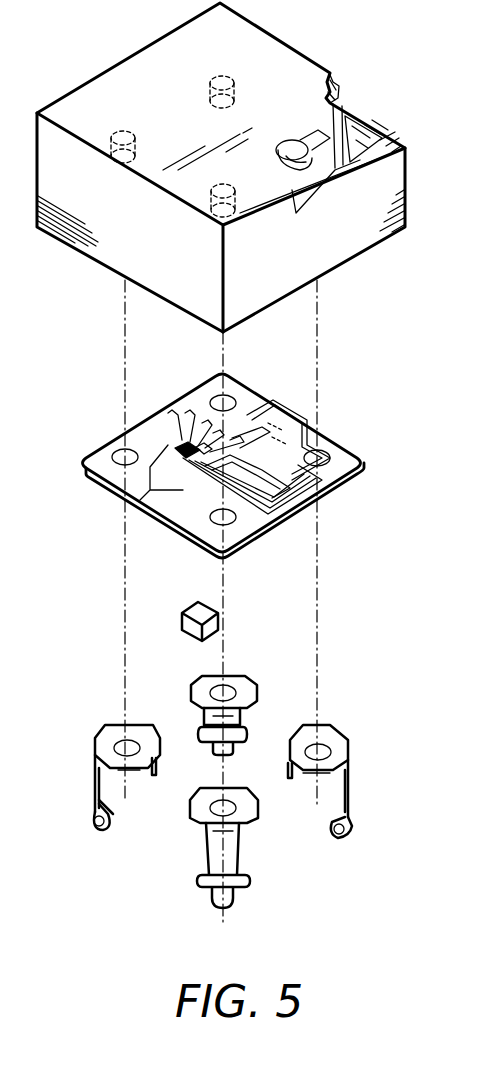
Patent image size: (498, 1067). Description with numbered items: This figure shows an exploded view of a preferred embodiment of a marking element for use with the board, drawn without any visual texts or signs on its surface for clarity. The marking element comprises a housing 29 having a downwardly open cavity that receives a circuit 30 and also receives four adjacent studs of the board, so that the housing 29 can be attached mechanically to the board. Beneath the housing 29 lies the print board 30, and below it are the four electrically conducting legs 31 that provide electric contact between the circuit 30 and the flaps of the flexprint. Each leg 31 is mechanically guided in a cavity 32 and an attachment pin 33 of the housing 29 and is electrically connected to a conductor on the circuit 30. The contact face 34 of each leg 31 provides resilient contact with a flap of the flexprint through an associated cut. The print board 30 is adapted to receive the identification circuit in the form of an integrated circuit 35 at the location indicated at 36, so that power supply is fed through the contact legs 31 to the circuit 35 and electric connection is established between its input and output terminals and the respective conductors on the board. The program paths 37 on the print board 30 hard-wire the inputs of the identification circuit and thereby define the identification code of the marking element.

The housing 29 is at (288, 68).
The circuit 30 is at (322, 480).
The electrically conducting legs 31 is at (237, 718).
The cavity 32 is at (362, 153).
The attachment pin 33 is at (330, 190).
The contact face 34 is at (330, 822).
The integrated circuit 35 is at (217, 638).
The location 36 is at (182, 450).
The program paths 37 is at (233, 437).